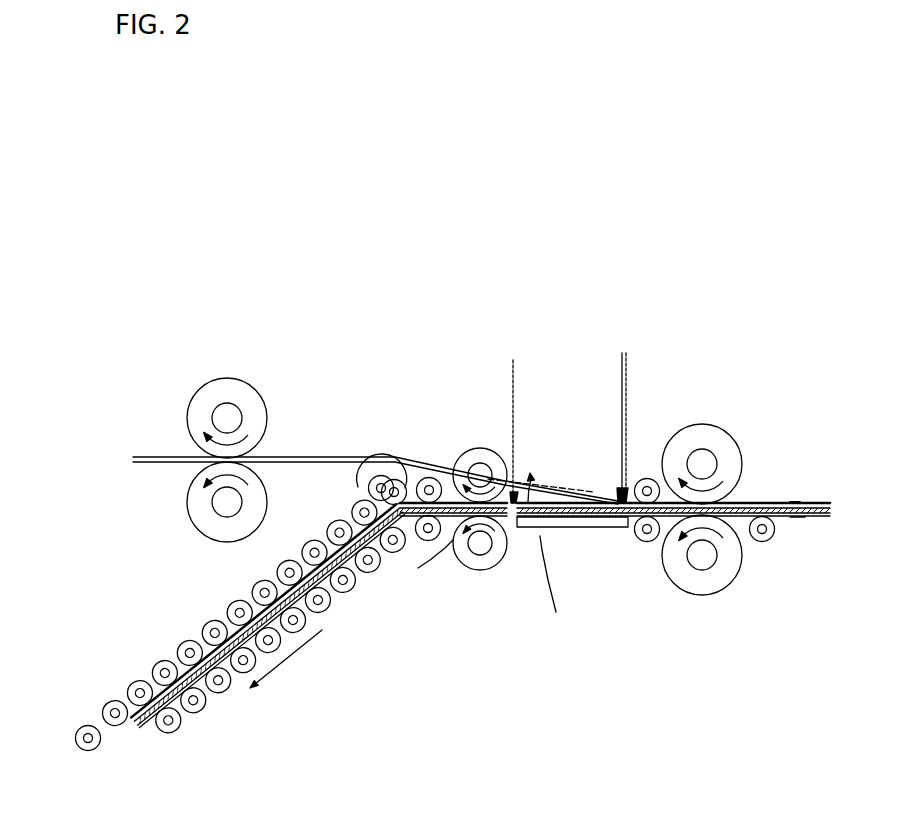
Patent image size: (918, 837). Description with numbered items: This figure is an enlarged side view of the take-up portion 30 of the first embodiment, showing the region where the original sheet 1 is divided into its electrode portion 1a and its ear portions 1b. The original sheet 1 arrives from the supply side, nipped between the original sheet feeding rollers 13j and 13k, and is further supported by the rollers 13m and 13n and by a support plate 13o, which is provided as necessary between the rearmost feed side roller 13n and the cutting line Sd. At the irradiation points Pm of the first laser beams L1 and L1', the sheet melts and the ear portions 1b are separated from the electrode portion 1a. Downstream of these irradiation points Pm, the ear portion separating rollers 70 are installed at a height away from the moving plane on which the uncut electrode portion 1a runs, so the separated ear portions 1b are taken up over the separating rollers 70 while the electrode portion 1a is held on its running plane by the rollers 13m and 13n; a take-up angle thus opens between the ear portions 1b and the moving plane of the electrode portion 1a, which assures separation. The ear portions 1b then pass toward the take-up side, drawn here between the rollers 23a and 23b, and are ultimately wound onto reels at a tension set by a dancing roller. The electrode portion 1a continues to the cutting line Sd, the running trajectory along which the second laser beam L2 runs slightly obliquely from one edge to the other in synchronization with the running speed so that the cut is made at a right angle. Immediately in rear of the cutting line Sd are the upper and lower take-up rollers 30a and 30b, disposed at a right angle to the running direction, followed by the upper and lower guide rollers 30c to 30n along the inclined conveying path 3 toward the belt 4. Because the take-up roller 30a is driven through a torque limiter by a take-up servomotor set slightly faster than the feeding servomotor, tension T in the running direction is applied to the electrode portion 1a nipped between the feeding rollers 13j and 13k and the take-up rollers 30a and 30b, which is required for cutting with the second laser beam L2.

The upper feed roller 23a is at (247, 398).
The lower feed roller 23b is at (192, 511).
The ear portion 1b is at (375, 445).
The take-up portion 30 is at (459, 563).
The upper take-up roller 30a is at (480, 444).
The lower take-up roller 30b is at (467, 575).
The guide roller 30c is at (419, 445).
The guide roller 30n is at (64, 722).
The inclined conveying belt 3 is at (185, 660).
The ear portion separating rollers 70 is at (345, 495).
The tension T is at (431, 565).
The second laser beam L2 is at (483, 421).
The irradiation point Pm is at (576, 420).
The first laser beam L1 is at (595, 428).
The first laser beam L1' is at (664, 420).
The cutting line Sd is at (555, 585).
The conveyor belt 4 is at (681, 495).
The original sheet 1 is at (756, 490).
The electrode portion 1a is at (799, 516).
The support plate 13o is at (572, 551).
The roller 13m is at (665, 445).
The roller 13n is at (656, 576).
The original sheet feeding roller 13j is at (707, 445).
The original sheet feeding roller 13k is at (713, 575).